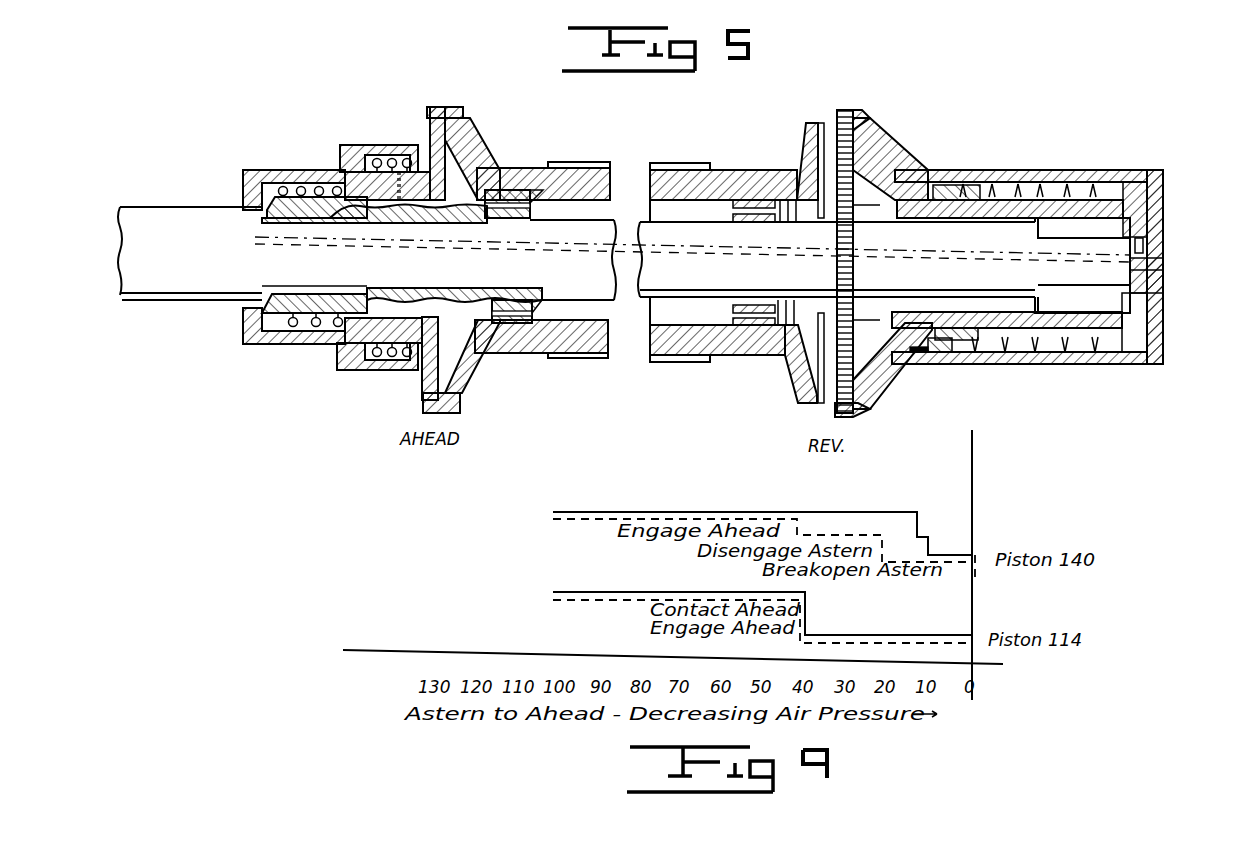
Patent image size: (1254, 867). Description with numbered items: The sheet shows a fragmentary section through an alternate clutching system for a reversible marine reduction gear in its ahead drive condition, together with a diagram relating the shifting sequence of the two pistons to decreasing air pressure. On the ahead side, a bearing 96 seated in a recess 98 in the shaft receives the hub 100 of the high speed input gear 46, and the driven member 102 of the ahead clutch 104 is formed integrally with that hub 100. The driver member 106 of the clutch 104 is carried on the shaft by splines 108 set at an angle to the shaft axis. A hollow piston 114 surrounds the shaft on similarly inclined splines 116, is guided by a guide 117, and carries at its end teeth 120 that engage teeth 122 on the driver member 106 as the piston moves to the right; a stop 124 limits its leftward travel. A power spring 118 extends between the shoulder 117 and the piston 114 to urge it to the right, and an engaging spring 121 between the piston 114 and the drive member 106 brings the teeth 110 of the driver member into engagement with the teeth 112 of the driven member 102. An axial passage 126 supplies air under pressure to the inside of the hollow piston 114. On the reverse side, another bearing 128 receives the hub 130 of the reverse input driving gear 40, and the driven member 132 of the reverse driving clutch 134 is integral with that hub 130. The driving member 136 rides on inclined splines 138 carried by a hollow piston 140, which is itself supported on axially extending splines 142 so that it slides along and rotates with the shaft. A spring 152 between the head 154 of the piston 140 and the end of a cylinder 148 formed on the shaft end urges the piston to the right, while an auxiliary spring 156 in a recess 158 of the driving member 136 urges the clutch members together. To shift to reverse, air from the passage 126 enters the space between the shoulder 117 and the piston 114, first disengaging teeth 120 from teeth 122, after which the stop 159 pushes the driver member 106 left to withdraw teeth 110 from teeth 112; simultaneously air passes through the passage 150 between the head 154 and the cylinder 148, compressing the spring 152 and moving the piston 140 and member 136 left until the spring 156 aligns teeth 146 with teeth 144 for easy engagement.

The reverse input driving gear 40 is at (703, 163).
The high speed input gear 46 is at (592, 162).
The bearing 96 is at (512, 190).
The recess 98 is at (516, 222).
The hub 100 is at (545, 168).
The driven member 102 is at (472, 142).
The ahead clutch 104 is at (464, 89).
The driver member 106 is at (437, 120).
The splines 108 is at (408, 303).
The teeth 110 is at (462, 400).
The teeth 112 is at (465, 110).
The hollow piston 114 is at (312, 345).
The splines 116 is at (325, 224).
The guide 117 is at (283, 188).
The power spring 118 is at (322, 197).
The teeth 120 is at (372, 156).
The engaging spring 121 is at (392, 146).
The teeth 122 is at (385, 362).
The stop 124 is at (355, 372).
The passage 126 is at (1163, 275).
The bearing 128 is at (768, 222).
The hub 130 is at (757, 170).
The driven member 132 is at (808, 122).
The reverse driving clutch 134 is at (865, 79).
The driving member 136 is at (922, 170).
The splines 138 is at (957, 312).
The hollow piston 140 is at (1032, 182).
The splines 142 is at (866, 330).
The teeth 144 is at (820, 123).
The teeth 146 is at (862, 118).
The cylinder 148 is at (1092, 172).
The passage 150 is at (1145, 240).
The spring 152 is at (992, 184).
The head 154 is at (1160, 172).
The auxiliary spring 156 is at (925, 182).
The recess 158 is at (936, 355).
The stop 159 is at (360, 150).